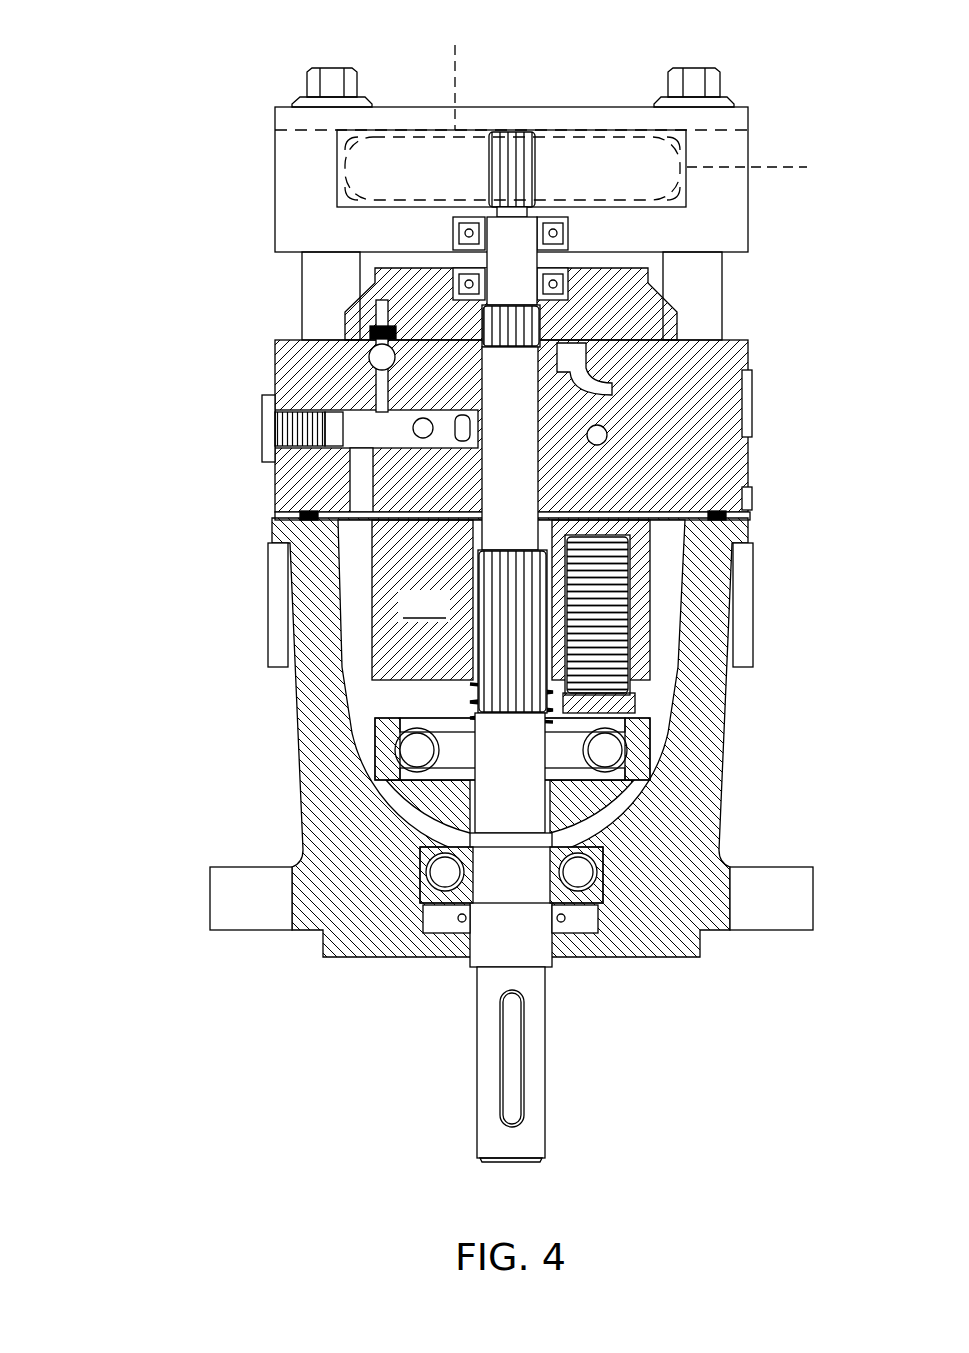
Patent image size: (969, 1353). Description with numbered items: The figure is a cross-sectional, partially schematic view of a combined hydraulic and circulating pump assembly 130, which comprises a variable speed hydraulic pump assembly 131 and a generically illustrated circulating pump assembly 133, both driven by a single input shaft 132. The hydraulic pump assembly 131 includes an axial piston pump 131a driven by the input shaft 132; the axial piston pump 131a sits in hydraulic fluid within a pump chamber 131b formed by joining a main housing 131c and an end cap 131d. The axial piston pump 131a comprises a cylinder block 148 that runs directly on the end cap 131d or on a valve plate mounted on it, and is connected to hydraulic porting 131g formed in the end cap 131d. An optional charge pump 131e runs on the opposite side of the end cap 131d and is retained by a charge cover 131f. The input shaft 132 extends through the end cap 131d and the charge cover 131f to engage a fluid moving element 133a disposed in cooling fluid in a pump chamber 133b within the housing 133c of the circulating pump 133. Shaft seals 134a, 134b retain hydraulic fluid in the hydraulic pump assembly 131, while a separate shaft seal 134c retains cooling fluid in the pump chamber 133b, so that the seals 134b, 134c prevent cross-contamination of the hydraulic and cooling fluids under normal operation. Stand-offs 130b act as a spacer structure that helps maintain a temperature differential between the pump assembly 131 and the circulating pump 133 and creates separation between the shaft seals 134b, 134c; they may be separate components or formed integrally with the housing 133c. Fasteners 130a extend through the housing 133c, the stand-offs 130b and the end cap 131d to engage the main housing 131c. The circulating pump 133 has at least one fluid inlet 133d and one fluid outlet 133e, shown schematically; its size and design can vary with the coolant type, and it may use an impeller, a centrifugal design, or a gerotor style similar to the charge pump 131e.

The combined hydraulic and circulating pump assembly 130 is at (458, 597).
The fasteners 130a is at (332, 68).
The stand-offs 130b is at (302, 305).
The variable speed hydraulic pump assembly 131 is at (223, 613).
The axial piston pump 131a is at (373, 693).
The pump chamber 131b is at (668, 617).
The main housing 131c is at (703, 730).
The end cap 131d is at (740, 455).
The charge pump 131e is at (326, 289).
The charge cover 131f is at (673, 307).
The hydraulic porting 131g is at (596, 387).
The input shaft 132 is at (548, 1052).
The circulating pump assembly 133 is at (226, 189).
The fluid moving element 133a is at (628, 148).
The pump chamber 133b is at (512, 168).
The housing 133c is at (749, 147).
The fluid inlet 133d is at (456, 68).
The fluid outlet 133e is at (788, 170).
The shaft seal 134a is at (577, 933).
The shaft seal 134b is at (553, 280).
The shaft seal 134c is at (453, 236).
The cylinder block 148 is at (422, 600).